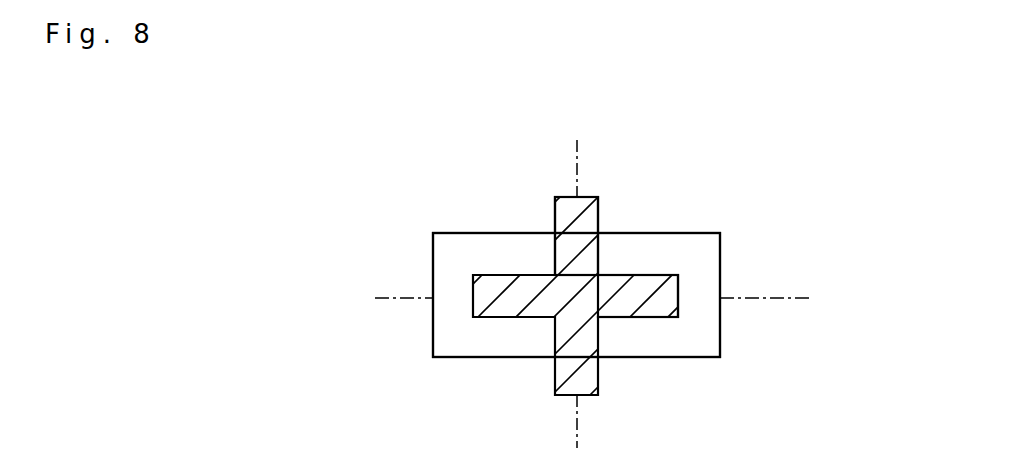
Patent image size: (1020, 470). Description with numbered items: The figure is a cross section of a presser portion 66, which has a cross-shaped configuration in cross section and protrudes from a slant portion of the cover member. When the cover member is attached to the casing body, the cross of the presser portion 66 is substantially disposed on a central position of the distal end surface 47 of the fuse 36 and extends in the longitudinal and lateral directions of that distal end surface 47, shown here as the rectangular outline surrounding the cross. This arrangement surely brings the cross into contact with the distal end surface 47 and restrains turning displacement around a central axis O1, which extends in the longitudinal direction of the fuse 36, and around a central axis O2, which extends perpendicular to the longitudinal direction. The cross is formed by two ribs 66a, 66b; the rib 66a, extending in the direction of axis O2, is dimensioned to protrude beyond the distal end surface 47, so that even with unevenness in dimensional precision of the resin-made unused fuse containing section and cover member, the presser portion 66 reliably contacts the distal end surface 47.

The fuse 36 is at (730, 227).
The distal end surface 47 is at (697, 268).
The presser portion 66 is at (546, 199).
The rib 66a is at (590, 227).
The rib 66b is at (660, 310).
The central axis O1 is at (785, 296).
The central axis O2 is at (582, 175).